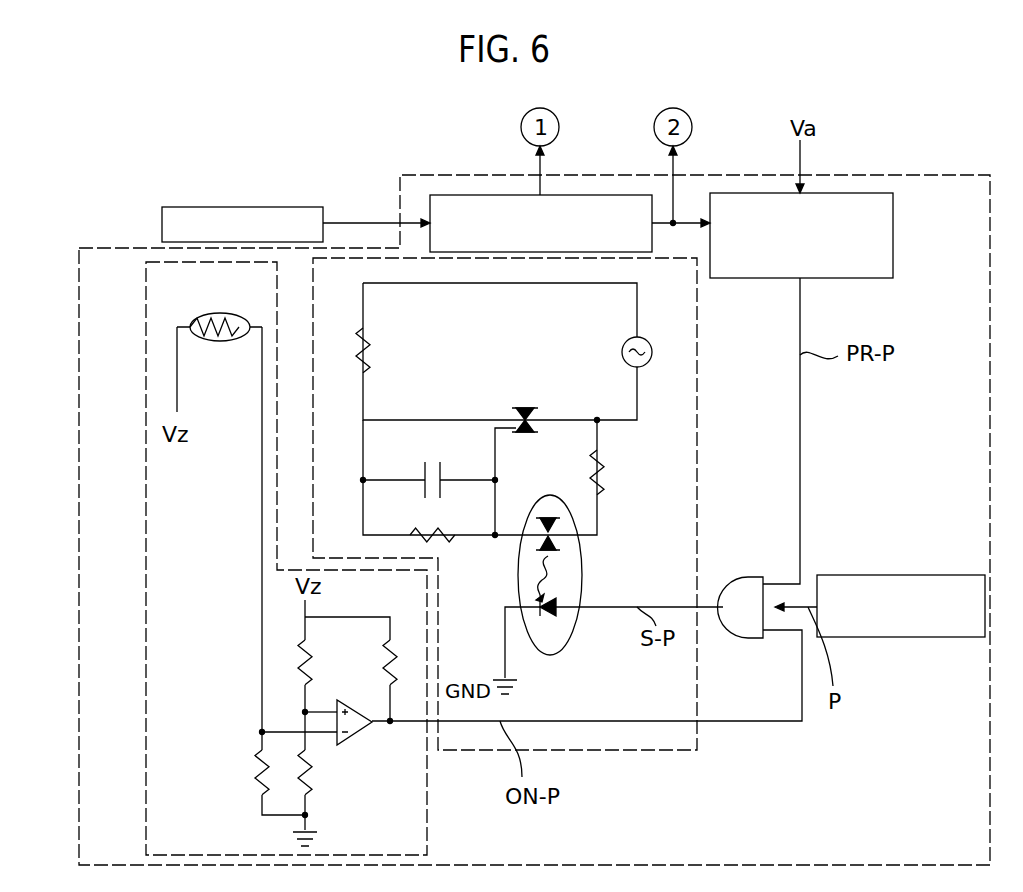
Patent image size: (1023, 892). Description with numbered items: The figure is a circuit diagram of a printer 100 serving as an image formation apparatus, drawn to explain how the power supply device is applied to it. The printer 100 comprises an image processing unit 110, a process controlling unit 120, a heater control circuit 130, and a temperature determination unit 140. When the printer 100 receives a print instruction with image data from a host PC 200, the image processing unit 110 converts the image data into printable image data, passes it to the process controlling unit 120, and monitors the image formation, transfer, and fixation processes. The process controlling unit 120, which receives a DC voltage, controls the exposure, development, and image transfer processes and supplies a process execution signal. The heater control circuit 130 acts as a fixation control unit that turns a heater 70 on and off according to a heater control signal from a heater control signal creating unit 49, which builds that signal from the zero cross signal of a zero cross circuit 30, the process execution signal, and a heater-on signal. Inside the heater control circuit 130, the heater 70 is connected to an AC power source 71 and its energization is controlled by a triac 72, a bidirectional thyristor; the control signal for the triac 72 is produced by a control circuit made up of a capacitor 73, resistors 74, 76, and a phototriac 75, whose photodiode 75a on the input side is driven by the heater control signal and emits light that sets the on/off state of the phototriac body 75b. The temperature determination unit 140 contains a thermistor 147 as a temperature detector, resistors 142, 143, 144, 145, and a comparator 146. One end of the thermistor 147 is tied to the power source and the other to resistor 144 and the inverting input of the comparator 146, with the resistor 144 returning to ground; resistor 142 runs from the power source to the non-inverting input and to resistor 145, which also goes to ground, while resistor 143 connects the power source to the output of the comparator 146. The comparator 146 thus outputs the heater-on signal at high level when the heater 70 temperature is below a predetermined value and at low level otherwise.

The printer 100 is at (79, 505).
The image processing unit 110 is at (594, 195).
The process controlling unit 120 is at (850, 193).
The heater control circuit 130 is at (697, 478).
The temperature determination unit 140 is at (146, 505).
The resistor 142 is at (312, 660).
The resistor 143 is at (390, 640).
The resistor 144 is at (256, 778).
The resistor 145 is at (312, 780).
The comparator 146 is at (358, 738).
The thermistor 147 is at (220, 341).
The host PC 200 is at (268, 207).
The zero cross circuit 30 is at (890, 575).
The heater control signal creating unit 49 is at (760, 577).
The heater 70 is at (363, 345).
The AC power source 71 is at (644, 366).
The triac 72 is at (527, 405).
The capacitor 73 is at (440, 470).
The resistor 74 is at (452, 535).
The phototriac 75 is at (590, 602).
The photodiode 75a is at (558, 616).
The phototriac body 75b is at (558, 545).
The resistor 76 is at (603, 485).